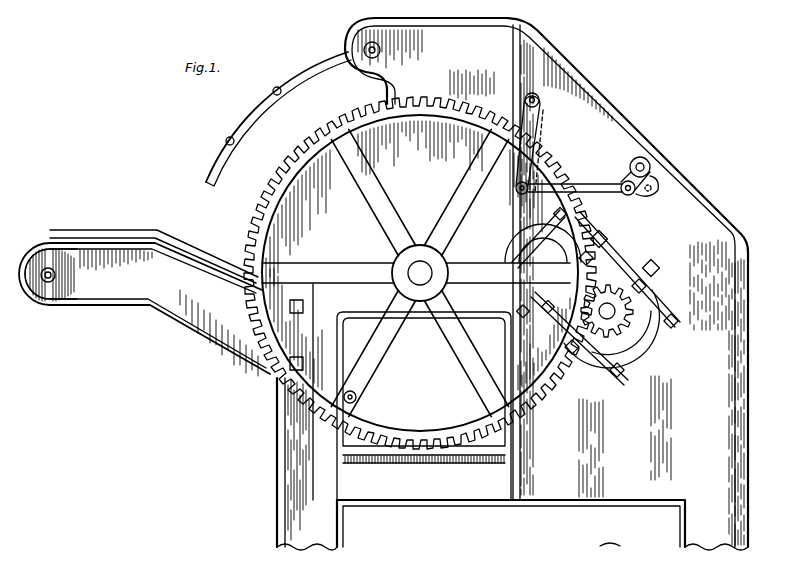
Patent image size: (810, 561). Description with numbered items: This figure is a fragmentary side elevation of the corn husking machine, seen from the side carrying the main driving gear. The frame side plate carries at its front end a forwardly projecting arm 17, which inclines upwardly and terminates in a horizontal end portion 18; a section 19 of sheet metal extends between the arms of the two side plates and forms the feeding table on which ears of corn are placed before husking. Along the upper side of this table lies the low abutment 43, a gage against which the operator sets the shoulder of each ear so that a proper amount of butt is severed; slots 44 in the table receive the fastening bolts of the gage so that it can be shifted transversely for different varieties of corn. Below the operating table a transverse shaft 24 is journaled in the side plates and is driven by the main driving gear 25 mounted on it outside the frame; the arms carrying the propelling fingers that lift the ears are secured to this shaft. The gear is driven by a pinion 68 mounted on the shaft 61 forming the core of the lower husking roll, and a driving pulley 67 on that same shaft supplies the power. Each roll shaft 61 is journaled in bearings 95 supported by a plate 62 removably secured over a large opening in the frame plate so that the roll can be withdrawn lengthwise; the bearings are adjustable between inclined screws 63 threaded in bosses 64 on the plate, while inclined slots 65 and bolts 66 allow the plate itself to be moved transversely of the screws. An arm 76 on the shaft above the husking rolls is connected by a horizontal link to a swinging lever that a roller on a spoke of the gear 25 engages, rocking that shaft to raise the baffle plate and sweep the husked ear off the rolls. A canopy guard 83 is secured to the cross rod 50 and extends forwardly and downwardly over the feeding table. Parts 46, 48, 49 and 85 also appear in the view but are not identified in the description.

The forwardly projecting arm 17 is at (152, 302).
The horizontal end portion 18 is at (75, 293).
The feeding table section 19 is at (512, 284).
The transverse shaft 24 is at (405, 275).
The main driving gear 25 is at (440, 432).
The low abutment 43 is at (110, 230).
The slots 44 is at (607, 186).
The pivot stud 46 is at (648, 162).
The lever 48 is at (530, 122).
The spoke bolt 49 is at (358, 398).
The cross rod 50 is at (381, 50).
The roll shaft 61 is at (623, 325).
The bearing plate 62 is at (565, 250).
The inclined screws 63 is at (608, 236).
The bosses 64 is at (610, 225).
The inclined slots 65 is at (677, 313).
The bolts 66 is at (552, 210).
The driving pulley 67 is at (614, 552).
The pinion 68 is at (609, 313).
The arm 76 is at (657, 193).
The canopy guard 83 is at (220, 163).
The bearing 85 is at (543, 239).
The bearings 95 is at (590, 274).